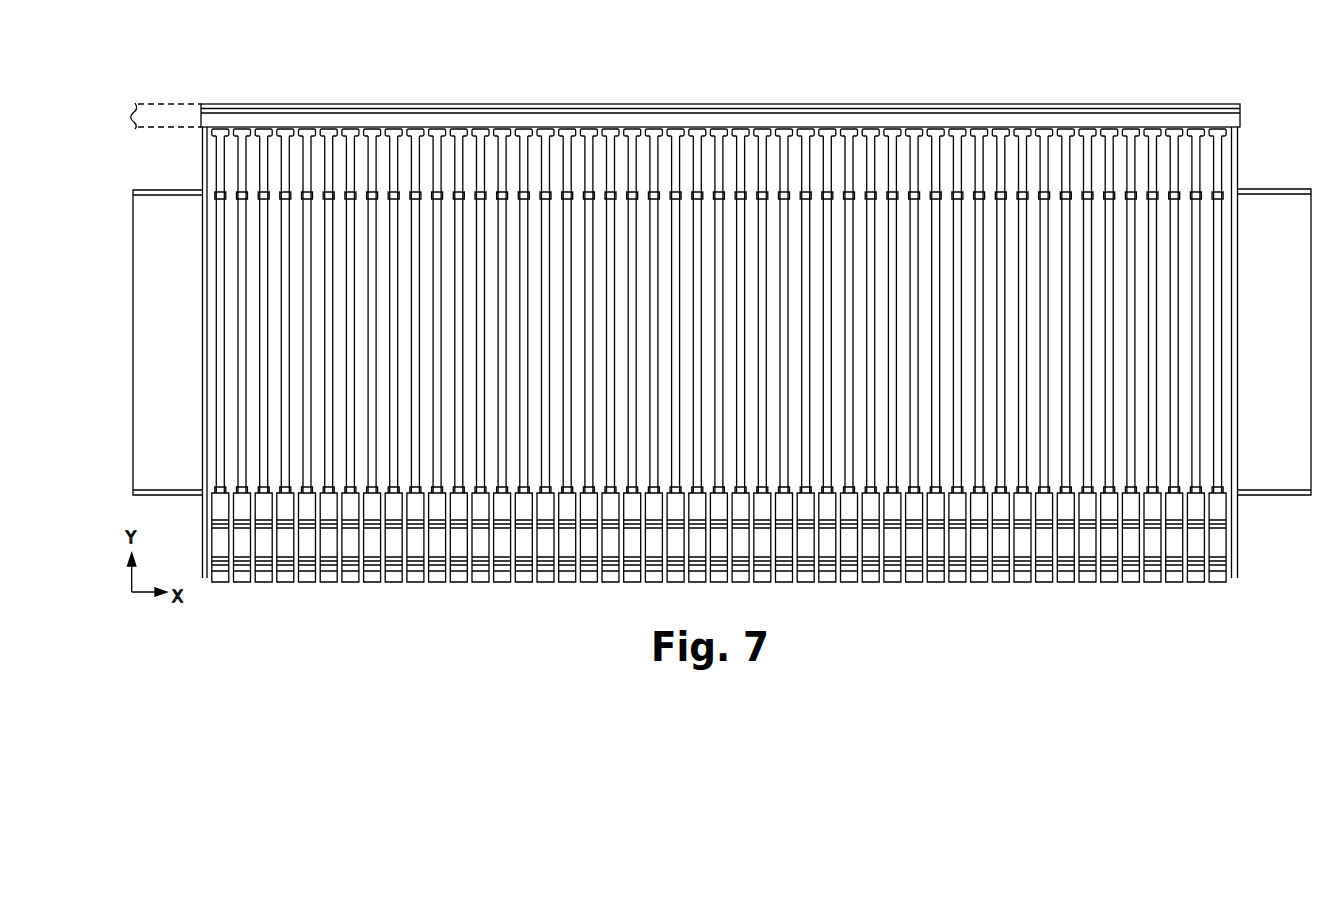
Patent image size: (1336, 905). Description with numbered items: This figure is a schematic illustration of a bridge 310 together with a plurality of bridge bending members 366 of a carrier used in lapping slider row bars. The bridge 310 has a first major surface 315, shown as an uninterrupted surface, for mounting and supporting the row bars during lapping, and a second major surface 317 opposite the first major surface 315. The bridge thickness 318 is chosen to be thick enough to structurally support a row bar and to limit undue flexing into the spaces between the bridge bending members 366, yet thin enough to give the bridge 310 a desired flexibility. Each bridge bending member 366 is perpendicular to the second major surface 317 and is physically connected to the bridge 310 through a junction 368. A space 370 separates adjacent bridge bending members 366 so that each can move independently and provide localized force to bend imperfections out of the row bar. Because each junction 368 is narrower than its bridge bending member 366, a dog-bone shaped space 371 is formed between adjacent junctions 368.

The bridge 310 is at (1247, 102).
The first major surface 315 is at (838, 104).
The second major surface 317 is at (851, 128).
The thickness 318 is at (131, 119).
The bridge bending member 366 is at (733, 167).
The junction 368 is at (731, 128).
The space 370 is at (655, 158).
The dog-bone shaped space 371 is at (632, 128).